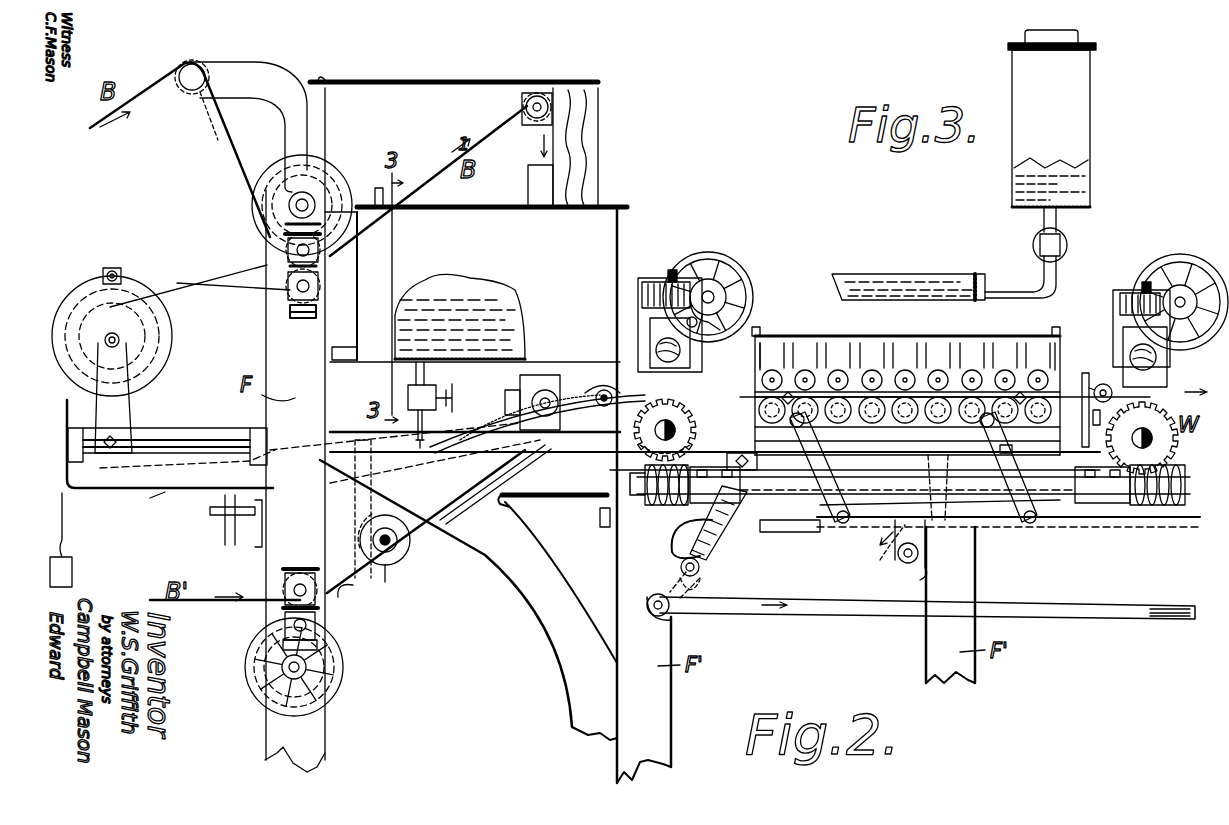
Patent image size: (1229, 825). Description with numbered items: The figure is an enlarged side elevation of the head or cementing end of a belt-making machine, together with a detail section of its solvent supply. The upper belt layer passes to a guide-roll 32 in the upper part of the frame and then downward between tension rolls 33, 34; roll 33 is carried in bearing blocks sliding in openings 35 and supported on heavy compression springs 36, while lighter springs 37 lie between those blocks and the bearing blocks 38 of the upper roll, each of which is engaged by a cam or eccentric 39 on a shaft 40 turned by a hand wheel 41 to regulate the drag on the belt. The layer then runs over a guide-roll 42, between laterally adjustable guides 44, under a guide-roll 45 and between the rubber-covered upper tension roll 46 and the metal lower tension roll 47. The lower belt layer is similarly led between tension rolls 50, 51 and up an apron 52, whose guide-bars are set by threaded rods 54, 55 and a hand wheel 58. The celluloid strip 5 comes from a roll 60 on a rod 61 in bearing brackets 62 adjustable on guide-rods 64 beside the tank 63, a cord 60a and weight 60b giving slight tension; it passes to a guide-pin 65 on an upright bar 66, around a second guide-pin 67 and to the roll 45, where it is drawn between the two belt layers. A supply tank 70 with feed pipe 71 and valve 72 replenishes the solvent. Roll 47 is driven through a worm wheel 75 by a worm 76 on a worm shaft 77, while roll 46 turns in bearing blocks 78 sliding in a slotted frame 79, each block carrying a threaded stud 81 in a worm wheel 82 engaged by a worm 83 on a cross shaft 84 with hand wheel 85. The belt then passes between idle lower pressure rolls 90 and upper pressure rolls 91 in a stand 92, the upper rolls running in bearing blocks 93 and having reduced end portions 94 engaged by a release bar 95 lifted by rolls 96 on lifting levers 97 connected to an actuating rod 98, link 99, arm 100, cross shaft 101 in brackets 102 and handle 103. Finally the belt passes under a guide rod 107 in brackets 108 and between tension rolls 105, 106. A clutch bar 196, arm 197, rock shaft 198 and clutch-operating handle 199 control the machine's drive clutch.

In FIG. 2, the frame member 5 is at (161, 504).
In FIG. 2, the guide-roll 32 is at (193, 95).
In FIG. 2, the tension roll 33 is at (322, 293).
In FIG. 2, the tension roll 34 is at (322, 247).
In FIG. 2, the bearing block openings 35 is at (318, 270).
In FIG. 2, the compression springs 36 is at (300, 318).
In FIG. 2, the lighter springs 37 is at (286, 290).
In FIG. 2, the bearing blocks 38 is at (286, 246).
In FIG. 2, the cam or eccentric 39 is at (280, 203).
In FIG. 2, the shaft 40 is at (310, 195).
In FIG. 2, the hand wheel 41 is at (280, 172).
In FIG. 2, the guide-roll 42 is at (528, 122).
In FIG. 2, the laterally adjustable guides 44 is at (530, 190).
In FIG. 2, the guide-roll 45 is at (560, 375).
In FIG. 2, the upper tension roll 46 is at (702, 352).
In FIG. 2, the lower tension roll 47 is at (693, 418).
In FIG. 2, the tension roll 50 is at (285, 622).
In FIG. 2, the tension roll 51 is at (285, 580).
In FIG. 2, the apron 52 is at (612, 405).
In FIG. 2, the rod 54 is at (388, 568).
In FIG. 2, the rod 55 is at (606, 388).
In FIG. 2, the hand wheel 58 is at (410, 550).
In FIG. 2, the roll of celluloid strip 60 is at (150, 318).
In FIG. 2, the belt or cord 60a is at (172, 282).
In FIG. 2, the weight 60b is at (72, 563).
In FIG. 2, the rod 61 is at (108, 329).
In FIG. 2, the bearing brackets 62 is at (132, 428).
In FIG. 3, the tank 63 is at (850, 276).
In FIG. 2, the tank 63 is at (152, 490).
In FIG. 2, the guide-rods 64 is at (198, 440).
In FIG. 2, the guide-pin 65 is at (108, 450).
In FIG. 2, the upright bar 66 is at (103, 278).
In FIG. 2, the second guide-pin 67 is at (432, 434).
In FIG. 3, the supply tank 70 is at (1088, 93).
In FIG. 2, the supply tank 70 is at (495, 362).
In FIG. 3, the feed pipe 71 is at (1056, 288).
In FIG. 2, the feed pipe 71 is at (425, 378).
In FIG. 3, the valve 72 is at (1067, 245).
In FIG. 2, the valve 72 is at (452, 402).
In FIG. 2, the worm wheel 75 is at (696, 440).
In FIG. 2, the worm 76 is at (656, 506).
In FIG. 2, the worm shaft 77 is at (632, 485).
In FIG. 2, the bearing blocks 78 is at (698, 323).
In FIG. 2, the slotted frame 79 is at (680, 350).
In FIG. 2, the threaded stud 81 is at (668, 270).
In FIG. 2, the worm wheel 82 is at (642, 298).
In FIG. 2, the worm 83 is at (720, 290).
In FIG. 2, the cross shaft 84 is at (700, 283).
In FIG. 2, the hand wheel 85 is at (718, 262).
In FIG. 2, the lower pressure rolls 90 is at (905, 424).
In FIG. 2, the upper pressure rolls 91 is at (802, 368).
In FIG. 2, the stand 92 is at (742, 449).
In FIG. 2, the bearing blocks 93 is at (858, 368).
In FIG. 2, the reduced outer end portions 94 is at (972, 370).
In FIG. 2, the release bar 95 is at (1012, 440).
In FIG. 2, the rolls 96 is at (889, 421).
In FIG. 2, the lifting levers 97 is at (820, 462).
In FIG. 2, the actuating rod 98 is at (1075, 530).
In FIG. 2, the link 99 is at (966, 508).
In FIG. 2, the arm 100 is at (888, 506).
In FIG. 2, the cross shaft 101 is at (898, 558).
In FIG. 2, the brackets 102 is at (926, 570).
In FIG. 2, the handle 103 is at (930, 474).
In FIG. 2, the tension roll 105 is at (1172, 366).
In FIG. 2, the tension roll 106 is at (1178, 438).
In FIG. 2, the guide rod 107 is at (1099, 384).
In FIG. 2, the brackets 108 is at (1104, 424).
In FIG. 2, the clutch bar 196 is at (858, 621).
In FIG. 2, the arm 197 is at (681, 573).
In FIG. 2, the rock shaft 198 is at (700, 578).
In FIG. 2, the clutch-operating handle 199 is at (728, 540).